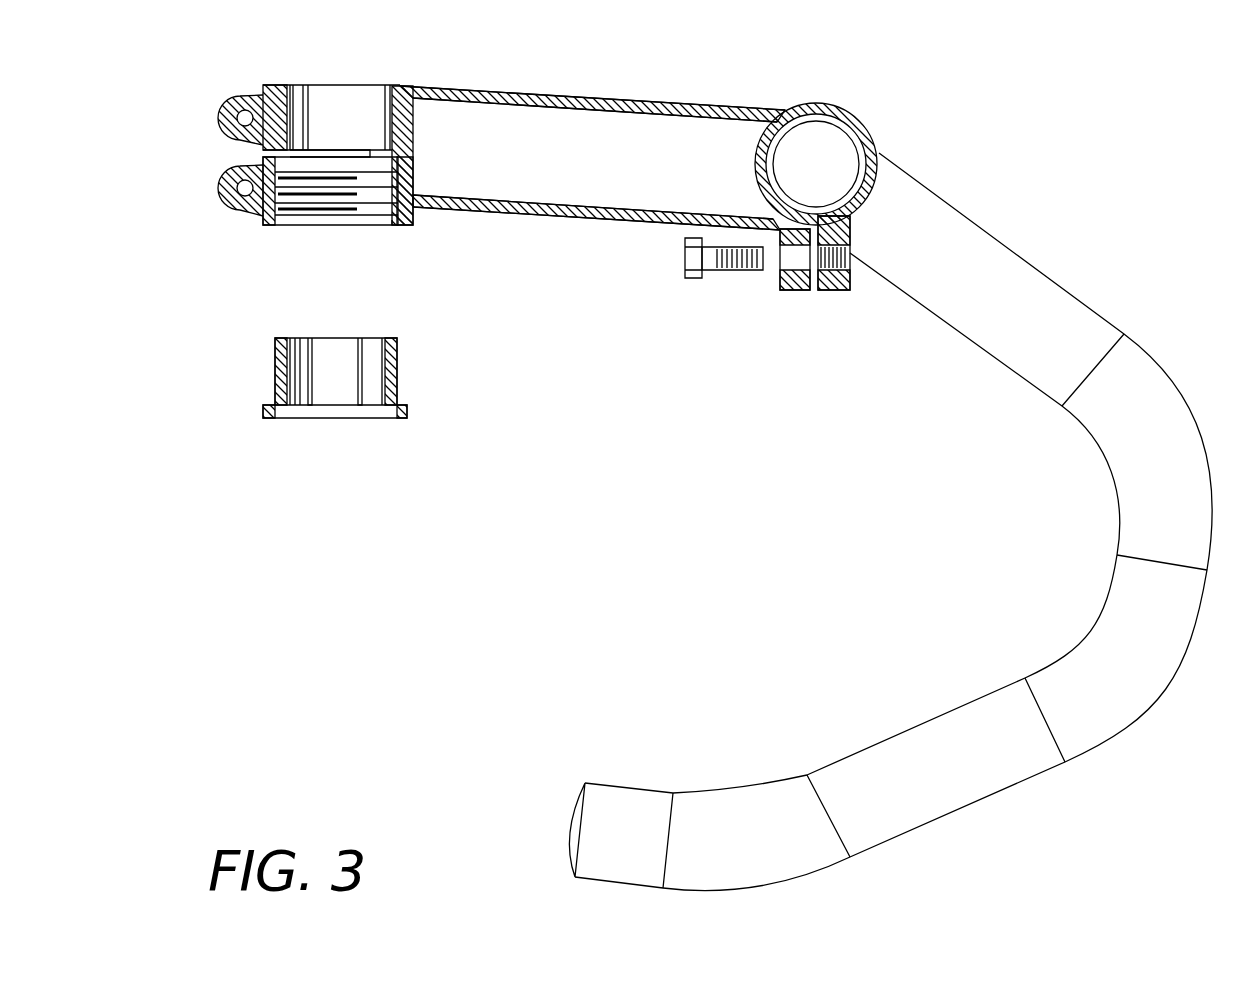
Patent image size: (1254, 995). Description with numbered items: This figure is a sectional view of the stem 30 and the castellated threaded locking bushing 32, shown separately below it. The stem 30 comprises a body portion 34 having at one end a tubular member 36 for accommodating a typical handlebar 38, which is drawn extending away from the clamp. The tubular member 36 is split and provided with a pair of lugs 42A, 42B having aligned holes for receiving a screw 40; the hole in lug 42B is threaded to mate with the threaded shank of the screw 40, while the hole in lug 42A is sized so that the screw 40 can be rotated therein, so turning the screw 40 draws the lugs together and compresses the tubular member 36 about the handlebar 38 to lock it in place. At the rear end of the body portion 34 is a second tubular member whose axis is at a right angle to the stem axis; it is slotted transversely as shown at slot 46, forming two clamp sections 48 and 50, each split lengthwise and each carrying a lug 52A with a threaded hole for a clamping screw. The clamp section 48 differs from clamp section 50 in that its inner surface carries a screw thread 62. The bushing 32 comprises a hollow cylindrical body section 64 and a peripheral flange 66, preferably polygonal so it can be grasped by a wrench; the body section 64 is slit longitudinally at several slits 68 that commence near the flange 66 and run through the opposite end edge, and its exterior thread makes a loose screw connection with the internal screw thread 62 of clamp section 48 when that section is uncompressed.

The stem 30 is at (143, 177).
The castellated threaded locking bushing 32 is at (188, 385).
The body portion 34 is at (606, 223).
The tubular member 36 is at (814, 104).
The handlebar 38 is at (962, 203).
The screw 40 is at (685, 258).
The lug 42A is at (792, 292).
The lug 42B is at (838, 292).
The slot 46 is at (323, 152).
The clamp section 48 is at (270, 225).
The clamp section 50 is at (277, 84).
The lug 52A is at (228, 176).
The screw thread 62 is at (388, 222).
The hollow body section 64 is at (398, 367).
The peripheral flange 66 is at (408, 414).
The slits 68 is at (357, 385).